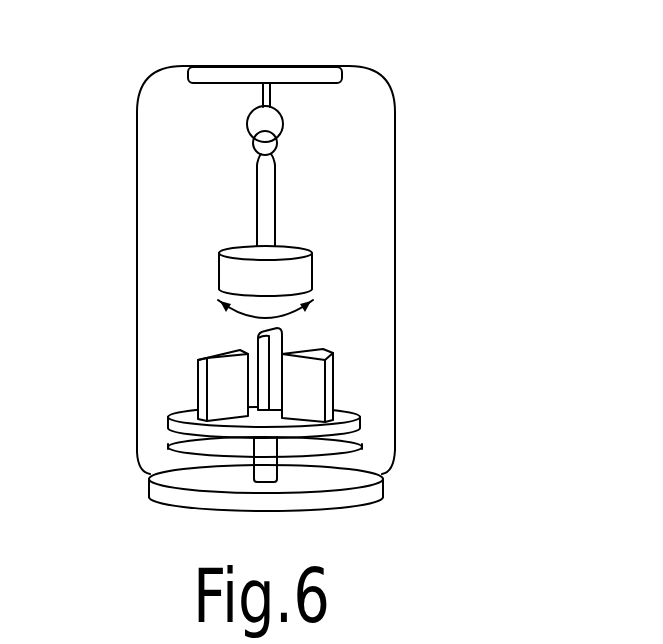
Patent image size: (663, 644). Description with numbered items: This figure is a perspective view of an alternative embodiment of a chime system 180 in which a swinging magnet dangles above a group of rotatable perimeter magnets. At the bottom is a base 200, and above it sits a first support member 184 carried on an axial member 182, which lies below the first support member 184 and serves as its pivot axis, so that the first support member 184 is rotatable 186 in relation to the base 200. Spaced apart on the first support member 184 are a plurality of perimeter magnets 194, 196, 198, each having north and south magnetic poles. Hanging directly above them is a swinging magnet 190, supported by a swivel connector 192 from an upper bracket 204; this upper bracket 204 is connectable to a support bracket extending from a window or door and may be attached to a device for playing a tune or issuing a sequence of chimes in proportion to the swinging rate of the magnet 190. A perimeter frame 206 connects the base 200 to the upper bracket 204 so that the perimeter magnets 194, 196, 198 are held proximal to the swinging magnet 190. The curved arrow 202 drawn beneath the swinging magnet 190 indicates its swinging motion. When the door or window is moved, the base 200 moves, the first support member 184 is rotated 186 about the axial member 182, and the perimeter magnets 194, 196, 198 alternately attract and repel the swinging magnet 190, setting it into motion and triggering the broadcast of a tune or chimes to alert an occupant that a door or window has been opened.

The chime system 180 is at (448, 153).
The axial member 182 is at (270, 473).
The first support member 184 is at (352, 410).
The rotation of the first support member 186 is at (355, 450).
The swinging magnet 190 is at (298, 268).
The swivel connector 192 is at (284, 122).
The perimeter magnet 194 is at (313, 373).
The perimeter magnet 196 is at (222, 390).
The perimeter magnet 198 is at (267, 347).
The base 200 is at (198, 503).
The swing motion arrow 202 is at (238, 313).
The upper bracket 204 is at (233, 75).
The perimeter frame 206 is at (137, 142).